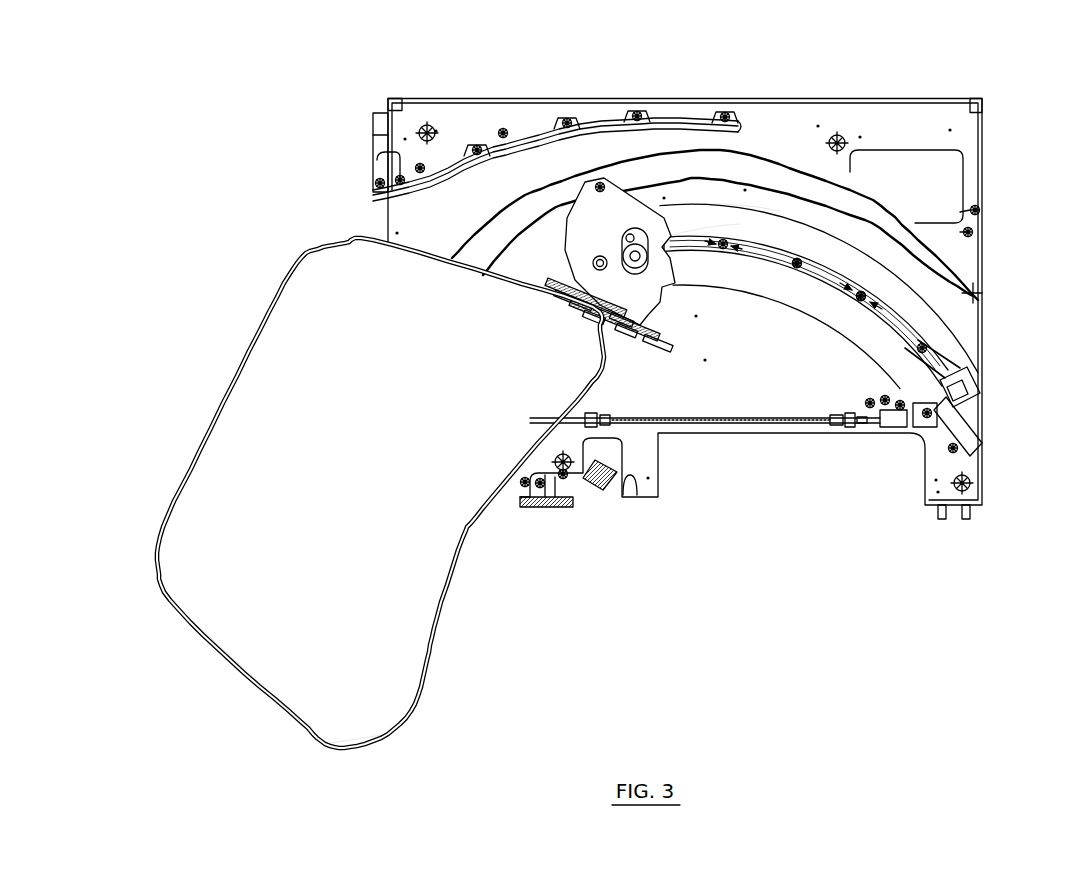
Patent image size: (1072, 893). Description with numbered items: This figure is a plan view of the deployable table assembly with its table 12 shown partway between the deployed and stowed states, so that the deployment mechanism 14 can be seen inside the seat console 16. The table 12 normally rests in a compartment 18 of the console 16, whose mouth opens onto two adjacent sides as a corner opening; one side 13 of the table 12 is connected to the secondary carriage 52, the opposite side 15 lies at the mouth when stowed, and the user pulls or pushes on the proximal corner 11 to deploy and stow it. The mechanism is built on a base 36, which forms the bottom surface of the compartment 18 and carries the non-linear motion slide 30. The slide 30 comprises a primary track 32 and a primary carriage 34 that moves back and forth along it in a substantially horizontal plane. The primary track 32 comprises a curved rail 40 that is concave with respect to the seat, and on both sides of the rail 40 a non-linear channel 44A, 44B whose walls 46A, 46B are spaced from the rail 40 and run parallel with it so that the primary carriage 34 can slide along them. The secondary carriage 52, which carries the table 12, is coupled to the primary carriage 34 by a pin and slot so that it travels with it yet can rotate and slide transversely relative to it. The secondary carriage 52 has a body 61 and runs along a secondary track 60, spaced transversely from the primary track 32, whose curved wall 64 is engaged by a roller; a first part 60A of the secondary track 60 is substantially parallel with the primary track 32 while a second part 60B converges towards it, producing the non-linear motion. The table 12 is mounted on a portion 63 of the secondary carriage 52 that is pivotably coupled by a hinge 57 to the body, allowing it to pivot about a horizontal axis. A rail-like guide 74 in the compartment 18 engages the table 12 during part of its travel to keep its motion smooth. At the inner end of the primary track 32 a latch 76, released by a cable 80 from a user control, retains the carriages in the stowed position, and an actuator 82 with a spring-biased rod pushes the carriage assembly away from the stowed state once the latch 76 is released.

The proximal corner 11 is at (373, 746).
The table 12 is at (340, 470).
The side of the table 13 is at (437, 259).
The deployment mechanism 14 is at (735, 218).
The opposite side of the table 15 is at (230, 661).
The seat console 16 is at (986, 162).
The compartment 18 is at (530, 158).
The non-linear motion slide 30 is at (910, 316).
The primary track 32 is at (921, 338).
The primary carriage 34 is at (672, 236).
The base 36 is at (757, 357).
The rail 40 is at (833, 300).
The non-linear channel 44A is at (780, 289).
The non-linear channel 44B is at (820, 249).
The wall 46A is at (862, 344).
The wall 46B is at (851, 240).
The secondary carriage 52 is at (569, 205).
The hinge 57 is at (627, 327).
The secondary track 60 is at (668, 158).
The first part of the secondary track 60A is at (804, 186).
The second part of the secondary track 60B is at (508, 230).
The body of the secondary carriage 61 is at (612, 218).
The portion of the secondary carriage 63 is at (613, 330).
The wall 64 is at (980, 208).
The guide 74 is at (593, 128).
The latch 76 is at (962, 381).
The cable 80 is at (738, 432).
The actuator 82 is at (968, 434).